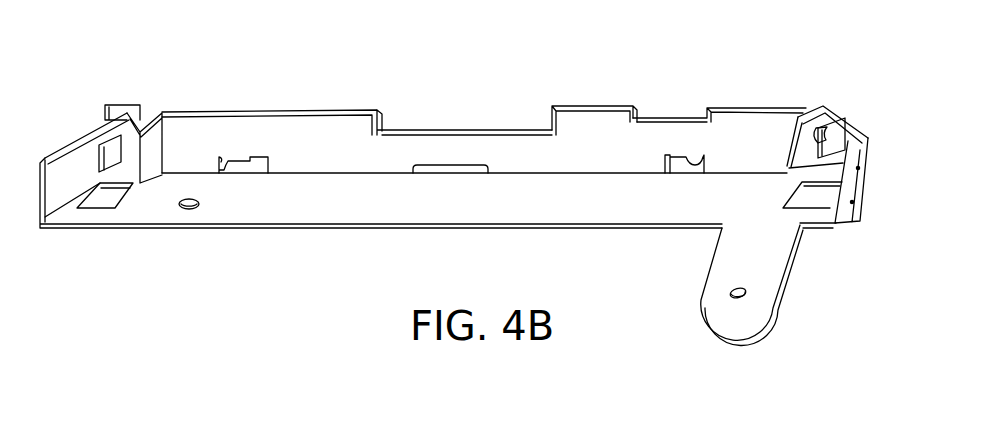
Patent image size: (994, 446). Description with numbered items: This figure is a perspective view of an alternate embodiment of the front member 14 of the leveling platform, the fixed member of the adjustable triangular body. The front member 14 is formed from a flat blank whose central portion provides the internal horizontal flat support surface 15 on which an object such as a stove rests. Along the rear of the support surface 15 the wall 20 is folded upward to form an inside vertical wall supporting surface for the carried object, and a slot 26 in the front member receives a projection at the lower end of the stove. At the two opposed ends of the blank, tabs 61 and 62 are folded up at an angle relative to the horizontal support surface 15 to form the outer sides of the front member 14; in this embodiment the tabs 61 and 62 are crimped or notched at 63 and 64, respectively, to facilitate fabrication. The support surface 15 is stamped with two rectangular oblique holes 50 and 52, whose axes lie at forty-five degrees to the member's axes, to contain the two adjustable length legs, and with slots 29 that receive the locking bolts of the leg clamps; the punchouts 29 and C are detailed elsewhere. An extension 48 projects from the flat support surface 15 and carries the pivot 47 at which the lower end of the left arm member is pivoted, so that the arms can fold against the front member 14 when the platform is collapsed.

The front member 14 is at (316, 230).
The horizontal flat support surface 15 is at (554, 207).
The upward extending right angle wall surface 20 is at (595, 128).
The slot 26 is at (458, 171).
The slot 29 is at (98, 167).
The pivot 47 is at (722, 293).
The extension 48 is at (716, 340).
The rectangular hole 50 is at (110, 206).
The rectangular hole 52 is at (822, 197).
The tab 61 is at (73, 155).
The tab 62 is at (858, 135).
The crimp or notch 63 is at (148, 121).
The crimp or notch 64 is at (809, 112).
The punchout C is at (258, 167).